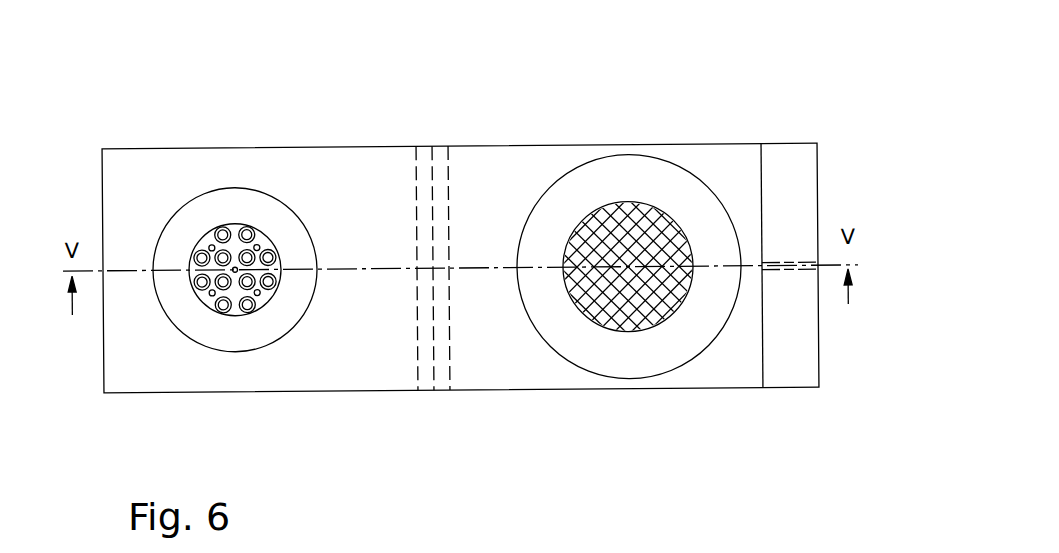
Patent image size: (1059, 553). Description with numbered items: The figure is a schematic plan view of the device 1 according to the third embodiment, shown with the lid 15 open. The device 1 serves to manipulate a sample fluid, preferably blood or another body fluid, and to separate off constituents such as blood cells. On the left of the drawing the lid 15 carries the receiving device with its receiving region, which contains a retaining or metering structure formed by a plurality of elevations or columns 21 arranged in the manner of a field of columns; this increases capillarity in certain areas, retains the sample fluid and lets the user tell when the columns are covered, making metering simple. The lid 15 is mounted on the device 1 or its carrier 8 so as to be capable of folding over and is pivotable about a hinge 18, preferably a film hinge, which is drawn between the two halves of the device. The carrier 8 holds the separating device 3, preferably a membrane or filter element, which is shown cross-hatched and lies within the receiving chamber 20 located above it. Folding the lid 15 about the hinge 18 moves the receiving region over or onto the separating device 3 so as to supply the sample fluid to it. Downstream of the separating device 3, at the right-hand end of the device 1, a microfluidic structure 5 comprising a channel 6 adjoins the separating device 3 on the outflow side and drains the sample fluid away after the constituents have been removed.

The device 1 is at (128, 98).
The elevations or columns 21 is at (272, 276).
The lid 15 is at (352, 175).
The hinge 18 is at (433, 148).
The carrier 8 is at (503, 170).
The receiving chamber 20 is at (600, 230).
The separating device 3 is at (660, 232).
The channel 6 is at (795, 263).
The microfluidic structure 5 is at (797, 374).